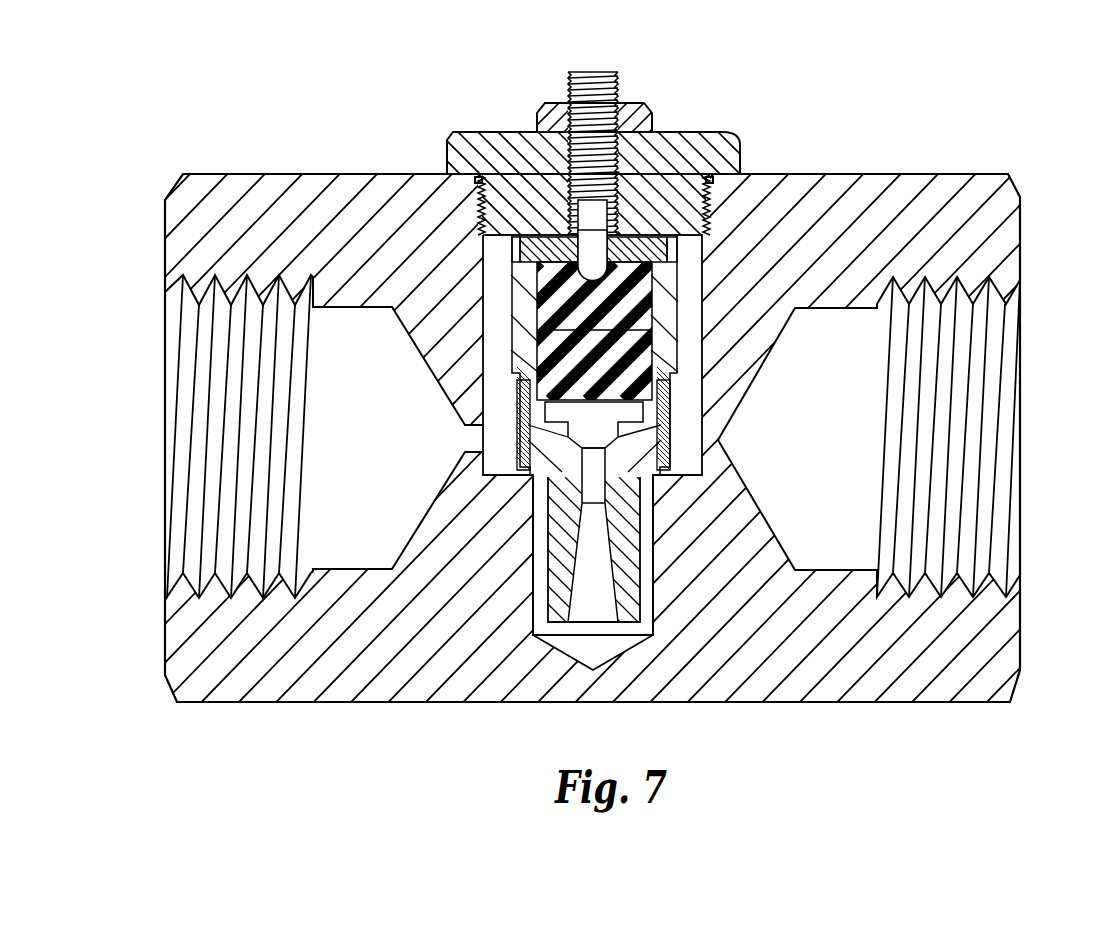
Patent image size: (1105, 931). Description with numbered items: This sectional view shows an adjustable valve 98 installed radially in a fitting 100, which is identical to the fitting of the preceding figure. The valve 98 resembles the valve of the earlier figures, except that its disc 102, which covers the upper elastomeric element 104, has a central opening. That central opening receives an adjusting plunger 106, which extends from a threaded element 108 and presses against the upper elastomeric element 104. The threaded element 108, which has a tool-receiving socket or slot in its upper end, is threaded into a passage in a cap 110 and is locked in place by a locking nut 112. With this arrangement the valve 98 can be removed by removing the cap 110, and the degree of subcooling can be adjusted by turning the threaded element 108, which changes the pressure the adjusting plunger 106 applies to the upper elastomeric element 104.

The valve 98 is at (680, 275).
The fitting 100 is at (985, 175).
The disc 102 is at (640, 250).
The upper elastomeric element 104 is at (547, 272).
The adjusting plunger 106 is at (527, 240).
The threaded element 108 is at (568, 78).
The cap 110 is at (740, 142).
The locking nut 112 is at (640, 105).